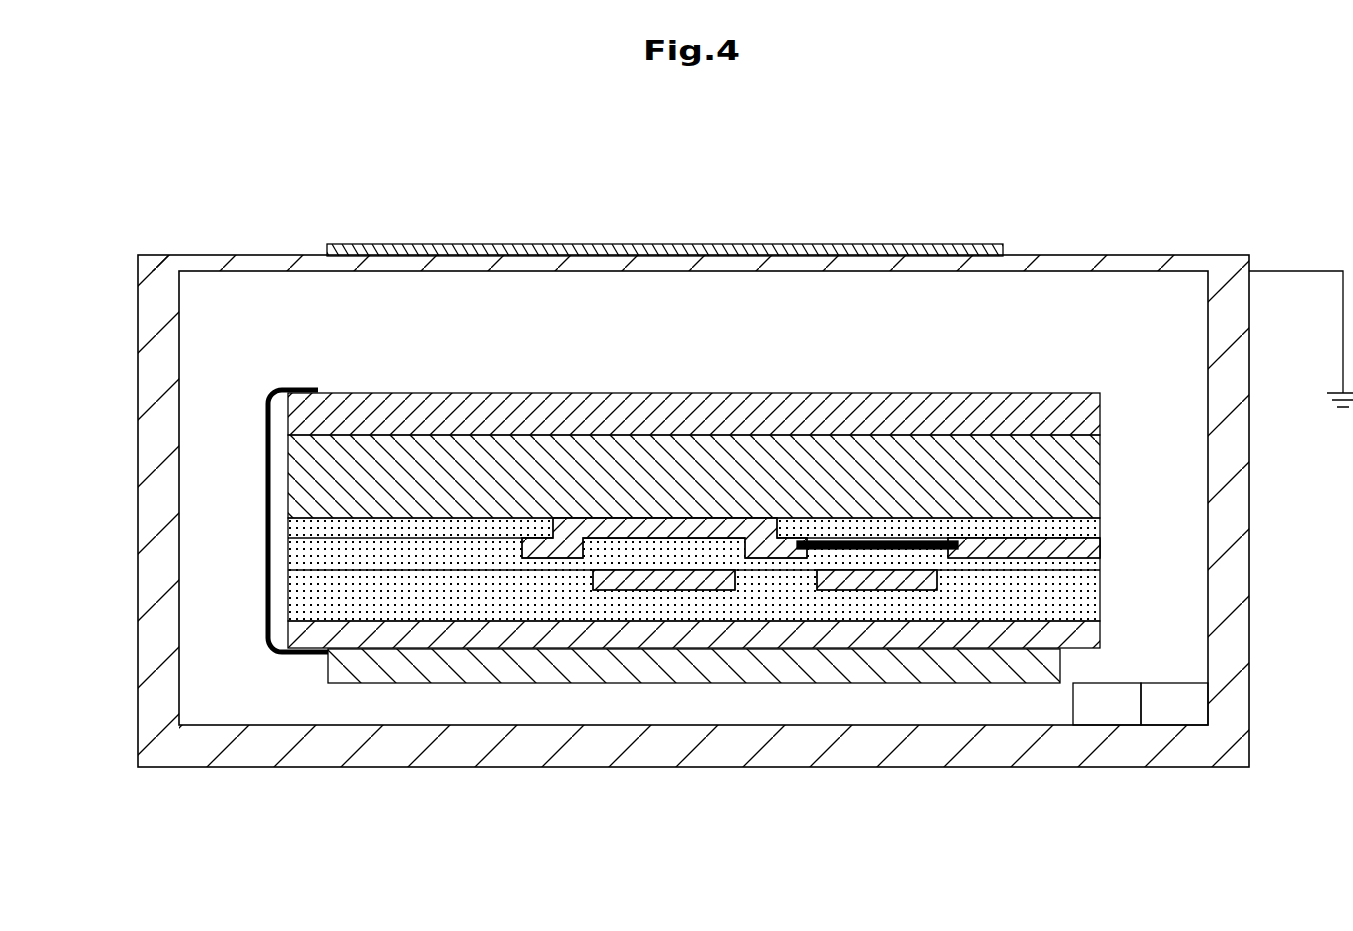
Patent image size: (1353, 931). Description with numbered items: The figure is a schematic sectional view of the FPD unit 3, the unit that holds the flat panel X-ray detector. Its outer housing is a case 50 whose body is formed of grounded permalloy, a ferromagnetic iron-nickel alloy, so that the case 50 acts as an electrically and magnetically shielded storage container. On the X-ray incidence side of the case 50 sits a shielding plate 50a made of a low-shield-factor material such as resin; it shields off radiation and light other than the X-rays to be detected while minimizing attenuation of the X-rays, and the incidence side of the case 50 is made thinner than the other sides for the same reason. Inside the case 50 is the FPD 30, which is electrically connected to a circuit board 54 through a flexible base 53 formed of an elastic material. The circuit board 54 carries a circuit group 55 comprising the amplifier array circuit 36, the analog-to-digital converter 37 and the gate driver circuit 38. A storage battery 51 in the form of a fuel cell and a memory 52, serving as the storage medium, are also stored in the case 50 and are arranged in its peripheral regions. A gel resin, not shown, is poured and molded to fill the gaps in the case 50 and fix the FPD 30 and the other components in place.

The FPD unit 3 is at (120, 488).
The case 50 is at (150, 404).
The shielding plate 50a is at (548, 245).
The FPD 30 is at (942, 385).
The circuit board 54 is at (1100, 628).
The flexible base 53 is at (267, 577).
The circuit group 55 is at (330, 650).
The amplifier array circuit 36 is at (694, 666).
The analog-to-digital converter 37 is at (694, 666).
The gate driver circuit 38 is at (694, 666).
The memory 52 is at (1125, 717).
The storage battery 51 is at (1193, 717).